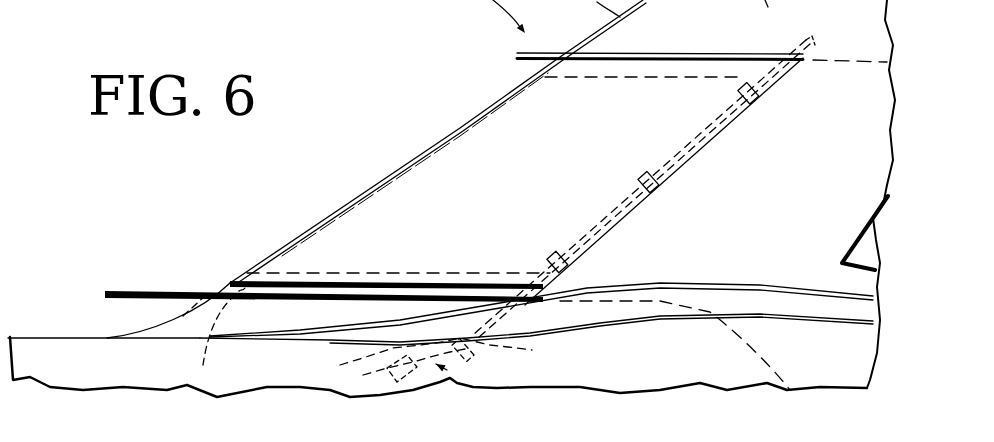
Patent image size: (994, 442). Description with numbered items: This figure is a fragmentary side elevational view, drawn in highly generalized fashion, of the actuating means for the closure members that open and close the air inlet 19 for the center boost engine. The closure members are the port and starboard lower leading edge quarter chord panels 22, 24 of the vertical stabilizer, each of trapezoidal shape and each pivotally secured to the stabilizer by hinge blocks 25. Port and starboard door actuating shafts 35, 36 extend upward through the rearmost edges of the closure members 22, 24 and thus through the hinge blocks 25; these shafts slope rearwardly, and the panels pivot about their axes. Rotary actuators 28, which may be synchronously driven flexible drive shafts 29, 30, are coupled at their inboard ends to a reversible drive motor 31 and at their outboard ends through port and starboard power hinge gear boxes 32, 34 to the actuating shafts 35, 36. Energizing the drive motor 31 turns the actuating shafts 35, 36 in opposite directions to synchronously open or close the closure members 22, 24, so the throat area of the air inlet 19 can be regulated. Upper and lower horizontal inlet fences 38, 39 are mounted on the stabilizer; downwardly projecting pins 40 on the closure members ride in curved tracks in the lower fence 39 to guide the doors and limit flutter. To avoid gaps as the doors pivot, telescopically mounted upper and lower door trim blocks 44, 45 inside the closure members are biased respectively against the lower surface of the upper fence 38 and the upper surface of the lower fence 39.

The air inlet 19 is at (428, 143).
The port lower leading edge quarter chord panel 22 is at (438, 143).
The starboard lower leading edge quarter chord panel 24 is at (464, 153).
The hinge block 25 is at (757, 97).
The rotary actuator 28 is at (447, 370).
The flexible drive shaft 29 is at (401, 357).
The flexible drive shaft 30 is at (436, 356).
The reversible drive motor 31 is at (381, 377).
The port power hinge gear box 32 is at (524, 356).
The starboard power hinge gear box 34 is at (473, 348).
The port door actuating shaft 35 is at (644, 187).
The starboard door actuating shaft 36 is at (620, 207).
The upper inlet fence 38 is at (534, 50).
The lower inlet fence 39 is at (158, 288).
The pin 40 is at (214, 332).
The upper door trim block 44 is at (608, 71).
The lower door trim block 45 is at (398, 288).